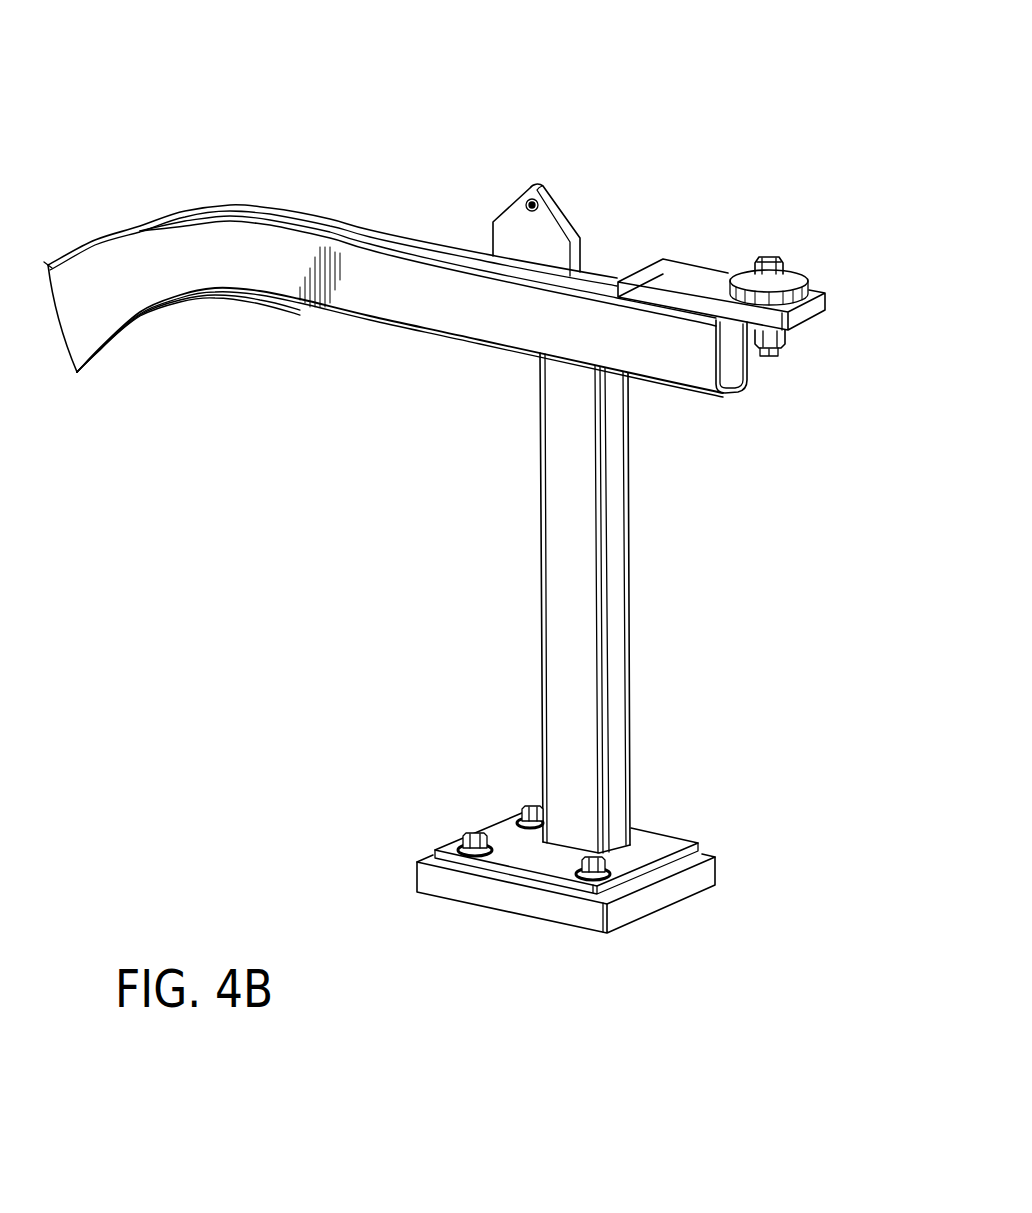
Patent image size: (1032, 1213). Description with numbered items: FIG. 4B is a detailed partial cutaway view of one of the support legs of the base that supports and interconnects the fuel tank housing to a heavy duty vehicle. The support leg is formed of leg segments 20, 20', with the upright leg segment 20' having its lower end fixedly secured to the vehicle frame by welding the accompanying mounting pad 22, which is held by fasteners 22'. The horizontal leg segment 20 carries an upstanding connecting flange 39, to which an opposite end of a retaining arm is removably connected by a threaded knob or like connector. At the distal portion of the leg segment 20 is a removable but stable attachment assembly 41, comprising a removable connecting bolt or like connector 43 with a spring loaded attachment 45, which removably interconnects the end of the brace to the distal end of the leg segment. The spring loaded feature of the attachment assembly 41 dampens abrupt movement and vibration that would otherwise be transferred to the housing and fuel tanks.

The leg segment 20 is at (383, 324).
The leg segment 20' is at (686, 603).
The mounting pad 22 is at (612, 944).
The fasteners (nuts) on base plate 22' is at (497, 751).
The upstanding connecting flange 39 is at (540, 182).
The attachment assembly 41 is at (817, 236).
The connecting bolt 43 is at (767, 255).
The spring loaded attachment 45 is at (787, 331).